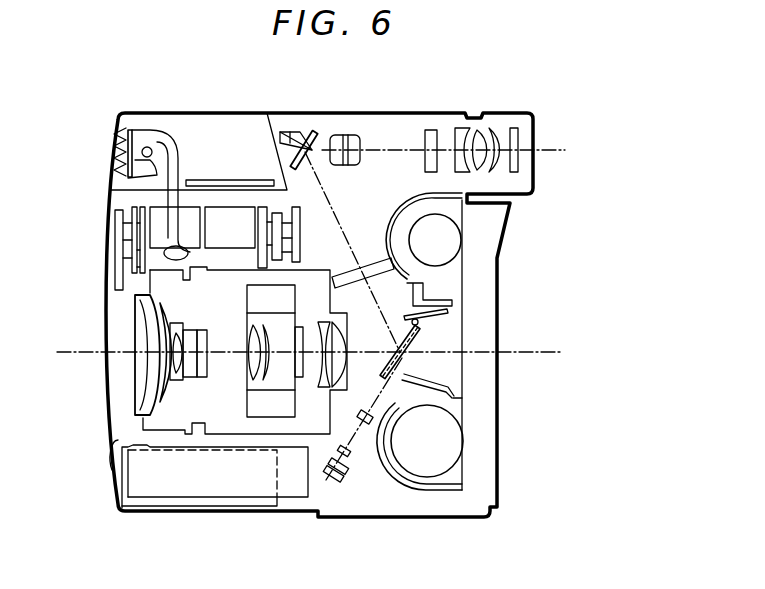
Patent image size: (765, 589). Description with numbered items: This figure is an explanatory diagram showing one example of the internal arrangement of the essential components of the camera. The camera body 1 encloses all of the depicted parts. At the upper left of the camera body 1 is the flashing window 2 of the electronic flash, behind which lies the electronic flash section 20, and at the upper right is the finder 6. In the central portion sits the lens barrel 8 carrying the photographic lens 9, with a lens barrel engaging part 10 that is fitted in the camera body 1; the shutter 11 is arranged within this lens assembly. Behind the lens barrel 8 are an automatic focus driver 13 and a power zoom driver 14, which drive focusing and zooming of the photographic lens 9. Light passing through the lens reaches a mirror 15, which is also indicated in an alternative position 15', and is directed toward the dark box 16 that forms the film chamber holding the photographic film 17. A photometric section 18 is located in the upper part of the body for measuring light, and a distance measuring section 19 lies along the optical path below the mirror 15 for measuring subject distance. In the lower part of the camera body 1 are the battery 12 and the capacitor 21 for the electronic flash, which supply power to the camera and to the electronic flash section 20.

The camera body 1 is at (497, 260).
The flashing window of the electronic flash 2 is at (112, 143).
The finder 6 is at (534, 130).
The lens barrel 8 is at (110, 455).
The photographic lens 9 is at (132, 388).
The lens barrel engaging part 10 is at (347, 392).
The shutter 11 is at (245, 383).
The battery 12 is at (215, 508).
The automatic focus driver 13 is at (152, 206).
The power zoom driver 14 is at (237, 213).
The mirror 15 is at (464, 331).
The mirror in alternate position 15' is at (495, 351).
The dark box 16 is at (448, 373).
The photographic film 17 is at (463, 387).
The photometric section 18 is at (282, 127).
The distance measuring section 19 is at (338, 480).
The electronic flash section 20 is at (213, 160).
The capacitor for the electronic flash 21 is at (290, 500).